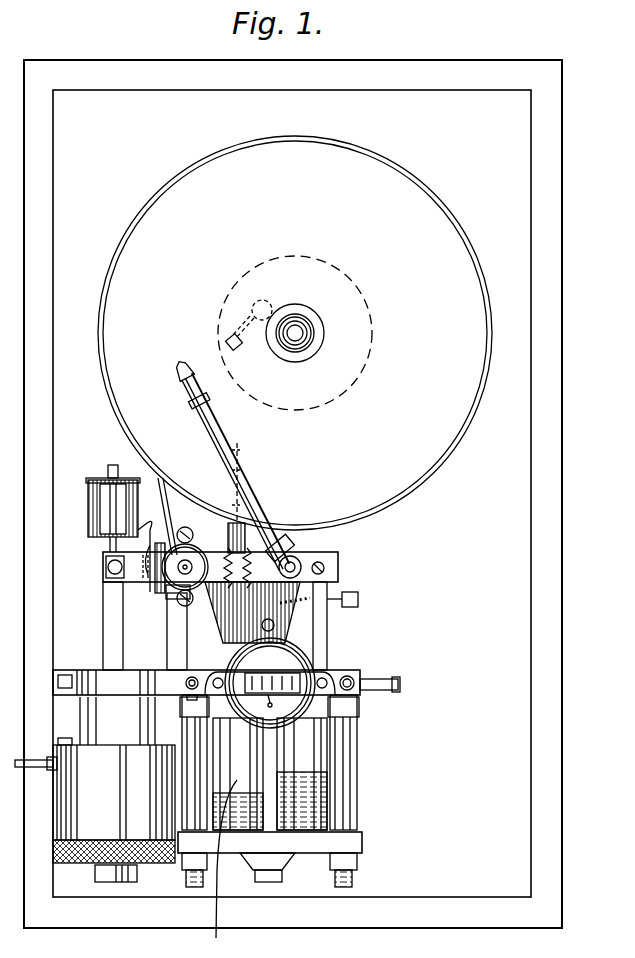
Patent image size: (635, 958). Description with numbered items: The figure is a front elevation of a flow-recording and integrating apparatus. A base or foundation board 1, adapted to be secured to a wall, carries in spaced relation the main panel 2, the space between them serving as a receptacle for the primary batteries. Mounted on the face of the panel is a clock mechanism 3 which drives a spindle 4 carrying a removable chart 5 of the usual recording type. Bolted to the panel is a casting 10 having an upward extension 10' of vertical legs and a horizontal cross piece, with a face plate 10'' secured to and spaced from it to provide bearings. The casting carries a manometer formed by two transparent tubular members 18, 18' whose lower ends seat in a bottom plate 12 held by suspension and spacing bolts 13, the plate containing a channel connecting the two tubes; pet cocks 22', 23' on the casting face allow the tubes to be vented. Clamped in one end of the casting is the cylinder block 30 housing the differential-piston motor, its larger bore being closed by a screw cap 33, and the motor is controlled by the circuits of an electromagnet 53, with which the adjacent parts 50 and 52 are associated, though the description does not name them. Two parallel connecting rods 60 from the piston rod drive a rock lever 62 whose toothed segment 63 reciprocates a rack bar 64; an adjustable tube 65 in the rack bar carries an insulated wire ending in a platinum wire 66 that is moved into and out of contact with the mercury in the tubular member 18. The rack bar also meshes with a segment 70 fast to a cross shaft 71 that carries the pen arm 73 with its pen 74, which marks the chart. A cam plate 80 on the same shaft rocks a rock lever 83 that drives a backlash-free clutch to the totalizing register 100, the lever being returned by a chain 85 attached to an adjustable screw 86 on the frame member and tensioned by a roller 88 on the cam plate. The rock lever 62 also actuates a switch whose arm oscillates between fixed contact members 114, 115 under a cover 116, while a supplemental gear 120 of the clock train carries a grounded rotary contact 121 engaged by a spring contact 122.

The base or foundation board 1 is at (557, 653).
The main panel 2 is at (527, 700).
The clock mechanism 3 is at (372, 326).
The spindle 4 is at (298, 333).
The removable chart 5 is at (465, 395).
The casting 10 is at (216, 672).
The upward extension 10' is at (250, 626).
The face plate 10'' is at (238, 568).
The bottom plate 12 is at (323, 848).
The suspension and spacing bolts 13 is at (185, 735).
The tubular member 18 is at (238, 774).
The tubular member 18' is at (332, 774).
The pet cock 22' is at (374, 674).
The pet cock 23' is at (197, 674).
The motor 30 is at (95, 768).
The screw cap 33 is at (80, 863).
The plunger rod 50 is at (112, 465).
The solenoid cap 52 is at (100, 478).
The electromagnet 53 is at (88, 512).
The connecting rods 60 is at (105, 630).
The rock lever 62 is at (122, 577).
The toothed segment 63 is at (222, 548).
The rack bar 64 is at (255, 527).
The tube 65 is at (248, 473).
The platinum wire 66 is at (226, 867).
The segment 70 is at (272, 547).
The cross shaft 71 is at (303, 557).
The pen arm 73 is at (262, 492).
The pen or marking implement 74 is at (193, 378).
The cam plate 80 is at (275, 625).
The rock lever 83 is at (217, 633).
The chain 85 is at (286, 597).
The adjustable screw 86 is at (350, 592).
The abutment or roller 88 is at (282, 640).
The totalizing register 100 is at (300, 668).
The fixed contact member 114 is at (183, 525).
The fixed contact member 115 is at (158, 600).
The cover 116 is at (150, 578).
The supplemental gear 120 is at (268, 302).
The rotary contact 121 is at (245, 330).
The spring contact 122 is at (242, 308).